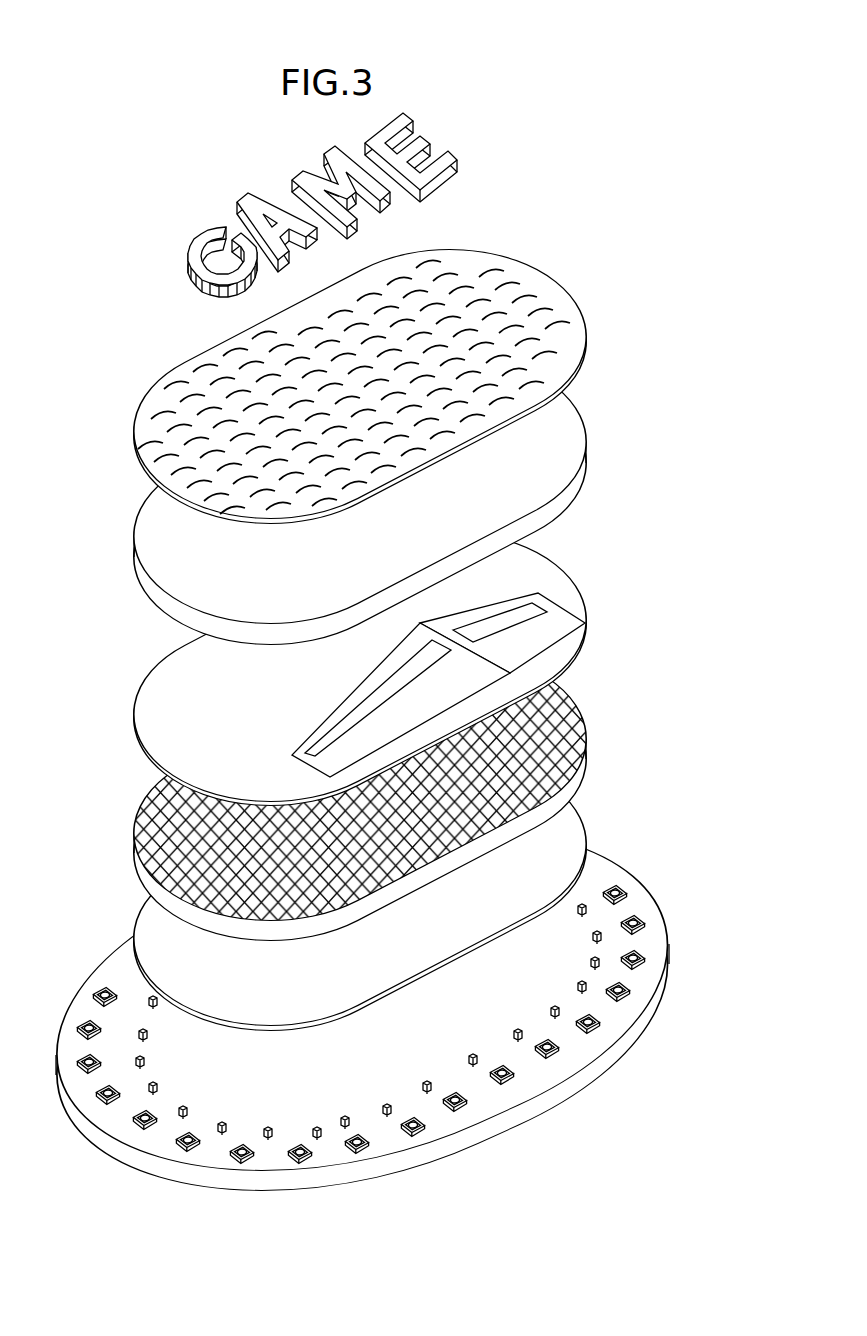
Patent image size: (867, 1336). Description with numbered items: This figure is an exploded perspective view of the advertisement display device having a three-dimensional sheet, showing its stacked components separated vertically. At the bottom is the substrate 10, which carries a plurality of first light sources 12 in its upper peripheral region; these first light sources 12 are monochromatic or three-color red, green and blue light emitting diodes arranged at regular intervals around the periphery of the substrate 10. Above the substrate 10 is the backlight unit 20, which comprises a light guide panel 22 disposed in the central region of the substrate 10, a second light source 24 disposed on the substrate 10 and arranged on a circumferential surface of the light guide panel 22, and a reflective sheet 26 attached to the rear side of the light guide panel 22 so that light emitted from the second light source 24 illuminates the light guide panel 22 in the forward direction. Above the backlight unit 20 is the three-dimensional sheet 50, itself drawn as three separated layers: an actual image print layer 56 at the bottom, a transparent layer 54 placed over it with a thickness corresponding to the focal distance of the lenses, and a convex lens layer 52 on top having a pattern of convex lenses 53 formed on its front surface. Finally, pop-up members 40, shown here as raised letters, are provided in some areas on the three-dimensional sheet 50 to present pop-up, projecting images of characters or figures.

The substrate 10 is at (667, 988).
The first light sources 12 is at (507, 1079).
The backlight unit 20 is at (395, 878).
The light guide panel 22 is at (671, 815).
The second light source 24 is at (583, 903).
The reflective sheet 26 is at (573, 825).
The pop-up members 40 is at (462, 151).
The 3D sheet 50 is at (394, 528).
The convex lens layer 52 is at (560, 372).
The convex lenses 53 is at (668, 538).
The transparent layer 54 is at (563, 467).
The actual image print layer 56 is at (553, 567).